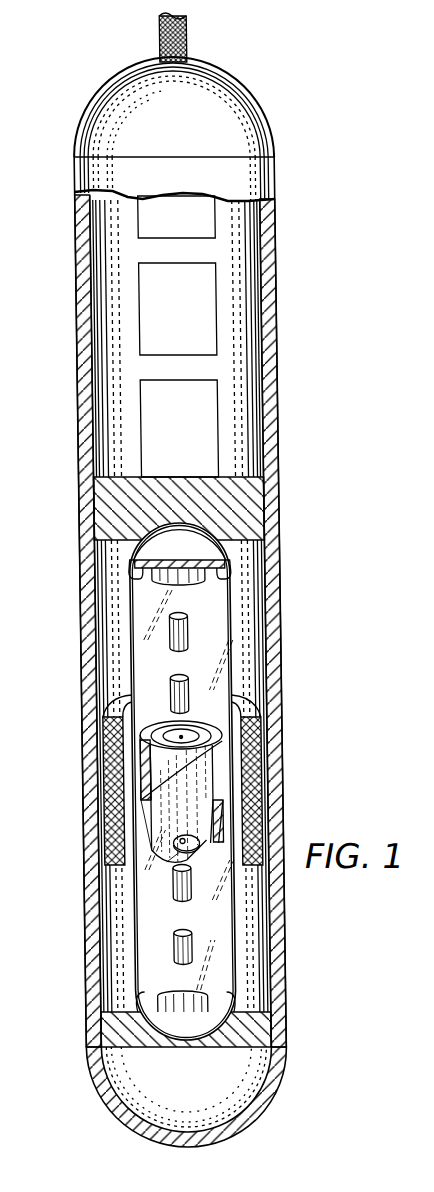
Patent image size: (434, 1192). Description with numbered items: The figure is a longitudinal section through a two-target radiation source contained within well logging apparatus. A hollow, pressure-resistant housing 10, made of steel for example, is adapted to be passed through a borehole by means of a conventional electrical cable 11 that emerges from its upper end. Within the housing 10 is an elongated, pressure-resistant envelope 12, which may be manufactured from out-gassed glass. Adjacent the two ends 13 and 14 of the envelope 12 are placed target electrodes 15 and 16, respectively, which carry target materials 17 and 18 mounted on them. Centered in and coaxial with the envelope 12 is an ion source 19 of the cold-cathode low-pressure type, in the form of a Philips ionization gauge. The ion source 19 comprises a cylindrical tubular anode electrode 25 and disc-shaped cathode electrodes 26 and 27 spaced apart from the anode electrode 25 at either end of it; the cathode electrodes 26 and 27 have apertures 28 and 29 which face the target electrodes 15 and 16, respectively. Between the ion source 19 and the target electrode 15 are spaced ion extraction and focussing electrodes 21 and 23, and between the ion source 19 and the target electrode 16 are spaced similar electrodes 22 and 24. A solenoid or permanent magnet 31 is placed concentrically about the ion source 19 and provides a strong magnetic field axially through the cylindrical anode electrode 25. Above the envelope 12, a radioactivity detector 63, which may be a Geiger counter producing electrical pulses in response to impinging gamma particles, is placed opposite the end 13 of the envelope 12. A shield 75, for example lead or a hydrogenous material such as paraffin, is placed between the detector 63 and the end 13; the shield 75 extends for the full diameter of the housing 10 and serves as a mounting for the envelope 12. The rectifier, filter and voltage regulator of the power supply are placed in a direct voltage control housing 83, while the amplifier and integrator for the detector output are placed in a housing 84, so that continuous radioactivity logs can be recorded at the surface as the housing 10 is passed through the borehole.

The housing 10 is at (273, 383).
The electrical cable 11 is at (185, 32).
The envelope 12 is at (223, 634).
The end of envelope 13 is at (184, 516).
The end of envelope 14 is at (195, 1048).
The target electrode 15 is at (218, 579).
The target electrode 16 is at (215, 997).
The target material 17 is at (159, 579).
The target material 18 is at (158, 996).
The ion source 19 is at (195, 858).
The ion extraction and focussing electrode 21 is at (181, 700).
The ion extraction and focussing electrode 22 is at (168, 892).
The ion extraction and focussing electrode 23 is at (169, 648).
The ion extraction and focussing electrode 24 is at (161, 947).
The cylindrical tubular anode electrode 25 is at (133, 733).
The cathode electrode 26 is at (187, 735).
The cathode electrode 27 is at (168, 860).
The aperture 28 is at (170, 737).
The aperture 29 is at (179, 838).
The magnet 31 is at (236, 706).
The radioactivity detector 63 is at (212, 456).
The shield 75 is at (93, 511).
The direct voltage control housing 83 is at (205, 356).
The housing 84 is at (205, 238).